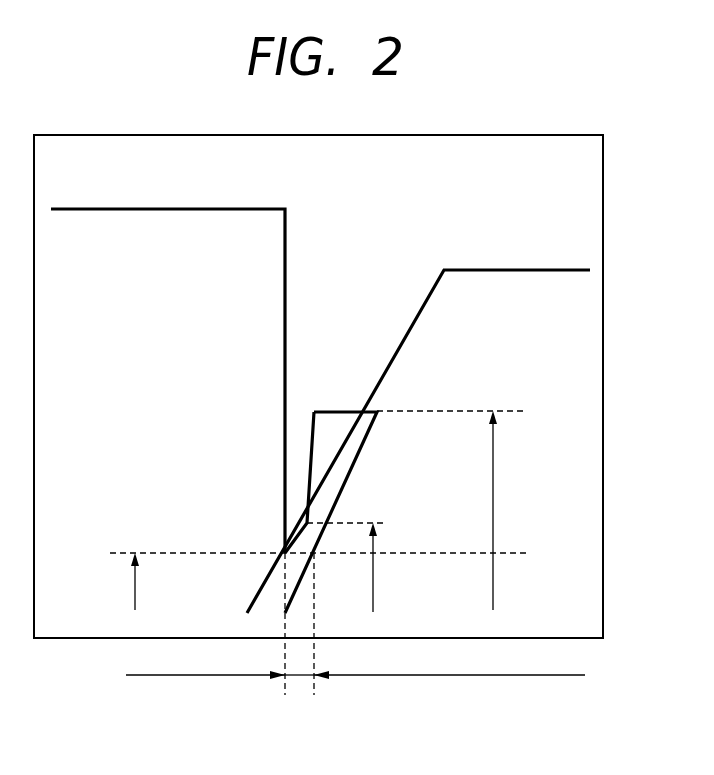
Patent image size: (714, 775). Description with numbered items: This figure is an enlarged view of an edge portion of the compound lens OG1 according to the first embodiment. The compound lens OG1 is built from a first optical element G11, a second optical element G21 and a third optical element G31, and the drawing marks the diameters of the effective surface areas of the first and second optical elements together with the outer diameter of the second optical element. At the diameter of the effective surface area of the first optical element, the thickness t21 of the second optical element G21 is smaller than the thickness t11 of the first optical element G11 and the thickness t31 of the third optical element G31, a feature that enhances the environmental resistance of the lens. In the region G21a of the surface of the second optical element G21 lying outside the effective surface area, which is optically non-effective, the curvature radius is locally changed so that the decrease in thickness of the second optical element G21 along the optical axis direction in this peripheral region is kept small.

The compound lens OG1 is at (595, 125).
The first optical element G11 is at (165, 226).
The second optical element G21 is at (335, 422).
The region of the surface of the second optical element outside the effective surfac G21a is at (310, 464).
The third optical element G31 is at (517, 283).
The thickness of the first optical element t11 is at (205, 689).
The thickness of the second optical element t21 is at (296, 677).
The thickness of the third optical element t31 is at (449, 689).